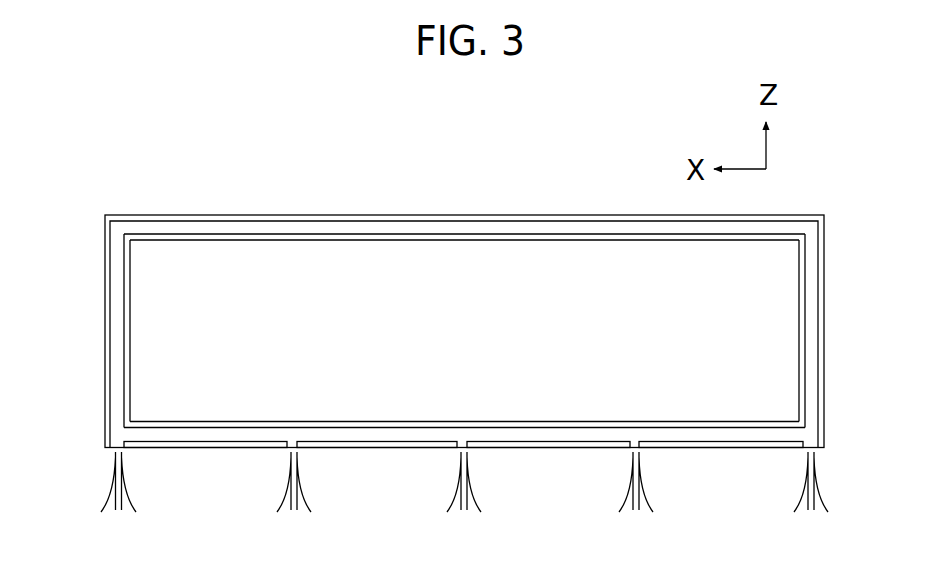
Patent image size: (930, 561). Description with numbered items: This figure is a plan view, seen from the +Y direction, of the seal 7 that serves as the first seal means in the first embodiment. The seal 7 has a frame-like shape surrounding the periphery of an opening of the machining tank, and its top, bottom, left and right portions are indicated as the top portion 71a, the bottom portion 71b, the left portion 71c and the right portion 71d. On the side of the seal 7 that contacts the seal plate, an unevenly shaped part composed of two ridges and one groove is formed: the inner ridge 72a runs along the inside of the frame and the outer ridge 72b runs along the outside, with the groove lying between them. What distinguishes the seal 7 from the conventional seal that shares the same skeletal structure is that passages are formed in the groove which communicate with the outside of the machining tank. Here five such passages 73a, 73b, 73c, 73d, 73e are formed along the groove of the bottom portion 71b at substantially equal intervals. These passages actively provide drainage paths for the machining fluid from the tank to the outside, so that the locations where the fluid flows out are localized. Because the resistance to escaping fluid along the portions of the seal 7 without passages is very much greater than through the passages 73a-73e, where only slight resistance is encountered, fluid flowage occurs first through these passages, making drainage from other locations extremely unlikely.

The seal 7 is at (393, 202).
The top portion 71a is at (473, 232).
The bottom portion 71b is at (570, 435).
The left portion 71c is at (118, 330).
The right portion 71d is at (807, 335).
The inner ridge 72a is at (247, 234).
The outer ridge 72b is at (303, 217).
The passage 73a is at (125, 459).
The passage 73b is at (301, 458).
The passage 73c is at (471, 459).
The passage 73d is at (643, 460).
The passage 73e is at (803, 459).